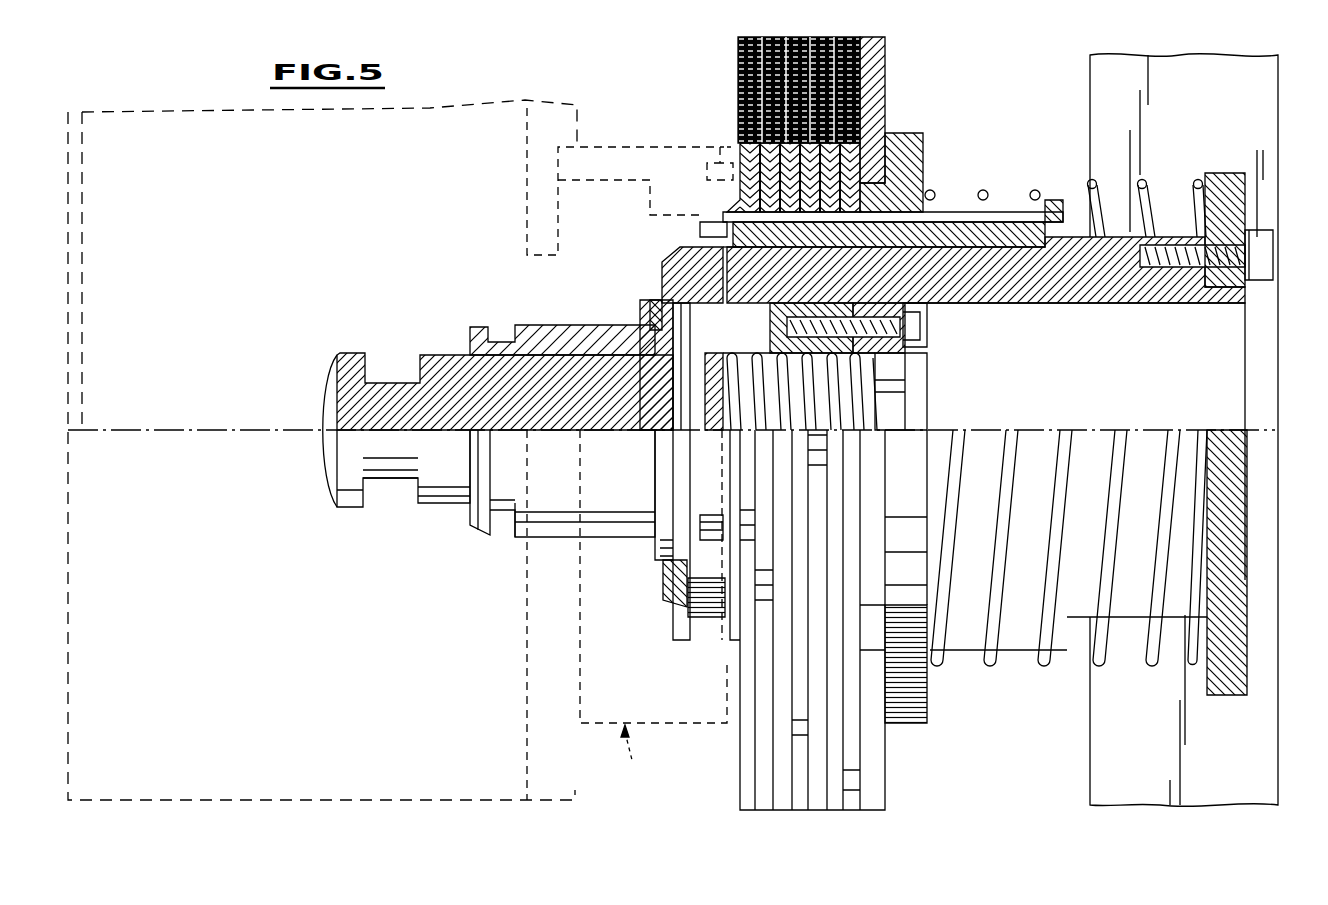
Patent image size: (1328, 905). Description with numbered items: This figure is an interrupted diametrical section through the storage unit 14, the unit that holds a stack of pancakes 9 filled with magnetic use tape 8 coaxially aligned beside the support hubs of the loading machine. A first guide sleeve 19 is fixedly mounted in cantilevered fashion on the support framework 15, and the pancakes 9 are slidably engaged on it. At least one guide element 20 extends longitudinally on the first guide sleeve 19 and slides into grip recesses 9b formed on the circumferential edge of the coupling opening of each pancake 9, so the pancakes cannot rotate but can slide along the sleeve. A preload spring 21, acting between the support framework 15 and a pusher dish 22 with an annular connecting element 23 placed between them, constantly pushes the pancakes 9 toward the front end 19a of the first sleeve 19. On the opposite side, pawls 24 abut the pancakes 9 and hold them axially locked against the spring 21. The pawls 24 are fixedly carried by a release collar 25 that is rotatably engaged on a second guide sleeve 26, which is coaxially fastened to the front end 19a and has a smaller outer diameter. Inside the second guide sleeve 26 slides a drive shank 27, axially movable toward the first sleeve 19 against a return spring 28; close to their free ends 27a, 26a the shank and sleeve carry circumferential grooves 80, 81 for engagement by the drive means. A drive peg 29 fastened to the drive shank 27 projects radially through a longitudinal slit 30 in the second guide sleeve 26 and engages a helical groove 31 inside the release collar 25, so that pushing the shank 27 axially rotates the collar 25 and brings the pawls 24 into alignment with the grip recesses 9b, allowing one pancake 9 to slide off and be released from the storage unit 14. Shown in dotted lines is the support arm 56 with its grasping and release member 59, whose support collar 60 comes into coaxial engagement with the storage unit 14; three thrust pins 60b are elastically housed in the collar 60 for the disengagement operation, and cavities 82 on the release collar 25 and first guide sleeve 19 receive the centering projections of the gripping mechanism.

The magnetic tape 8 is at (740, 62).
The pancake 9 is at (737, 126).
The grip recesses 9b is at (707, 262).
The storage unit 14 is at (632, 121).
The support framework 15 is at (1230, 673).
The first guide sleeve 19 is at (1112, 245).
The front end of the first sleeve 19a is at (742, 268).
The guide element 20 is at (993, 237).
The preload spring 21 is at (1040, 185).
The pusher dish 22 is at (880, 82).
The annular connecting element 23 is at (910, 165).
The pawl 24 is at (700, 229).
The release collar 25 is at (668, 270).
The second guide sleeve 26 is at (560, 328).
The free end of the second guide sleeve 26a is at (462, 525).
The drive shank 27 is at (455, 385).
The free end of the drive shank 27a is at (370, 415).
The return spring 28 is at (860, 408).
The drive peg 29 is at (673, 368).
The longitudinal slit 30 is at (680, 340).
The helical groove 31 is at (705, 297).
The support arm 56 is at (588, 795).
The grasping and release member 59 is at (628, 756).
The support collar 60 is at (645, 140).
The thrust pins 60b is at (718, 148).
The circumferential groove of the drive shank 80 is at (392, 487).
The circumferential groove of the second guide sleeve 81 is at (495, 520).
The cavities 82 is at (672, 573).